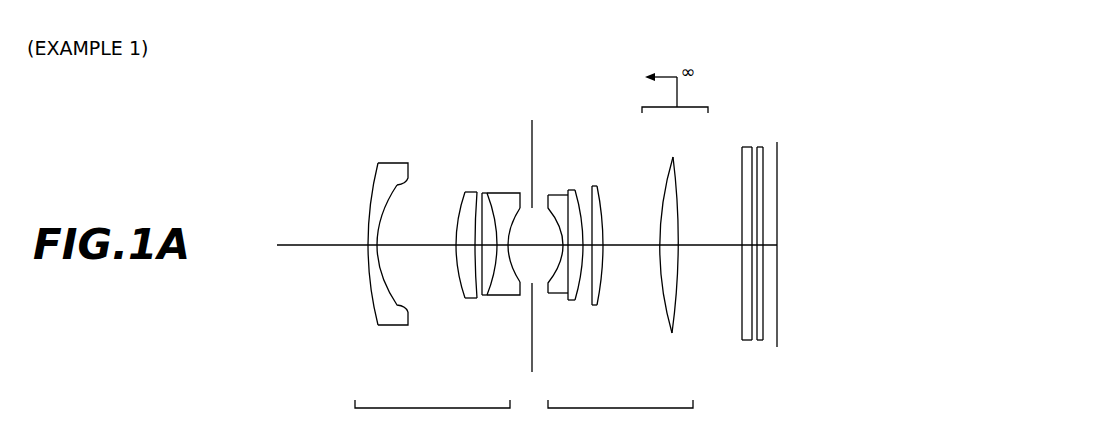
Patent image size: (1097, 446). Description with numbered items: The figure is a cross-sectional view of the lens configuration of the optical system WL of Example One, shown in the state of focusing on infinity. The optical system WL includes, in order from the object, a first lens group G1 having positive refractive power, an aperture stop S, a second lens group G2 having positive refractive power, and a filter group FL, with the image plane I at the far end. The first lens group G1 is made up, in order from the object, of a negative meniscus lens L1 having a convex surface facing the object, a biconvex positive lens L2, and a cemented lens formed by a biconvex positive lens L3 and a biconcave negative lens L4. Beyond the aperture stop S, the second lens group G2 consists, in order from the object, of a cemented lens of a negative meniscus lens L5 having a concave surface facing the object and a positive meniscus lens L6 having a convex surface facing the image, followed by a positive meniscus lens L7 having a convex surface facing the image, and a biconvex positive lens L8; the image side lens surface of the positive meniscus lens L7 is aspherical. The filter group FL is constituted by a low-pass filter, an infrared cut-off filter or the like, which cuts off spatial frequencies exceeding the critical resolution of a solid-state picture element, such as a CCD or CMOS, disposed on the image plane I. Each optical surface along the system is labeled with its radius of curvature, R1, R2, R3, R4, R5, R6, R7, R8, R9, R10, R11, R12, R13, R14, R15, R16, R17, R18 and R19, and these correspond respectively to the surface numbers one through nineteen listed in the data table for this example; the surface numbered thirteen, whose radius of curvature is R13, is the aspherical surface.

The optical system WL is at (949, 101).
The first lens group G1 is at (439, 270).
The second lens group G2 is at (620, 279).
The negative meniscus lens L1 is at (396, 254).
The biconvex positive lens L2 is at (457, 274).
The biconvex positive lens L3 is at (484, 274).
The biconcave negative lens L4 is at (505, 274).
The negative meniscus lens L5 is at (555, 263).
The positive meniscus lens L6 is at (582, 263).
The positive meniscus lens L7 is at (605, 263).
The biconvex positive lens L8 is at (675, 263).
The aperture stop S is at (530, 241).
The filter group FL is at (759, 236).
The image plane I is at (777, 347).
The radius of curvature R1 is at (367, 172).
The radius of curvature R2 is at (405, 182).
The radius of curvature R3 is at (458, 196).
The radius of curvature R4 is at (477, 193).
The radius of curvature R5 is at (482, 192).
The radius of curvature R6 is at (496, 197).
The radius of curvature R7 is at (518, 194).
The radius of curvature R8 is at (532, 120).
The radius of curvature R9 is at (540, 198).
The radius of curvature R10 is at (566, 194).
The radius of curvature R11 is at (575, 190).
The radius of curvature R12 is at (592, 186).
The radius of curvature R13 is at (604, 194).
The radius of curvature R14 is at (666, 172).
The radius of curvature R15 is at (679, 175).
The radius of curvature R16 is at (742, 156).
The radius of curvature R17 is at (754, 148).
The radius of curvature R18 is at (758, 148).
The radius of curvature R19 is at (764, 152).